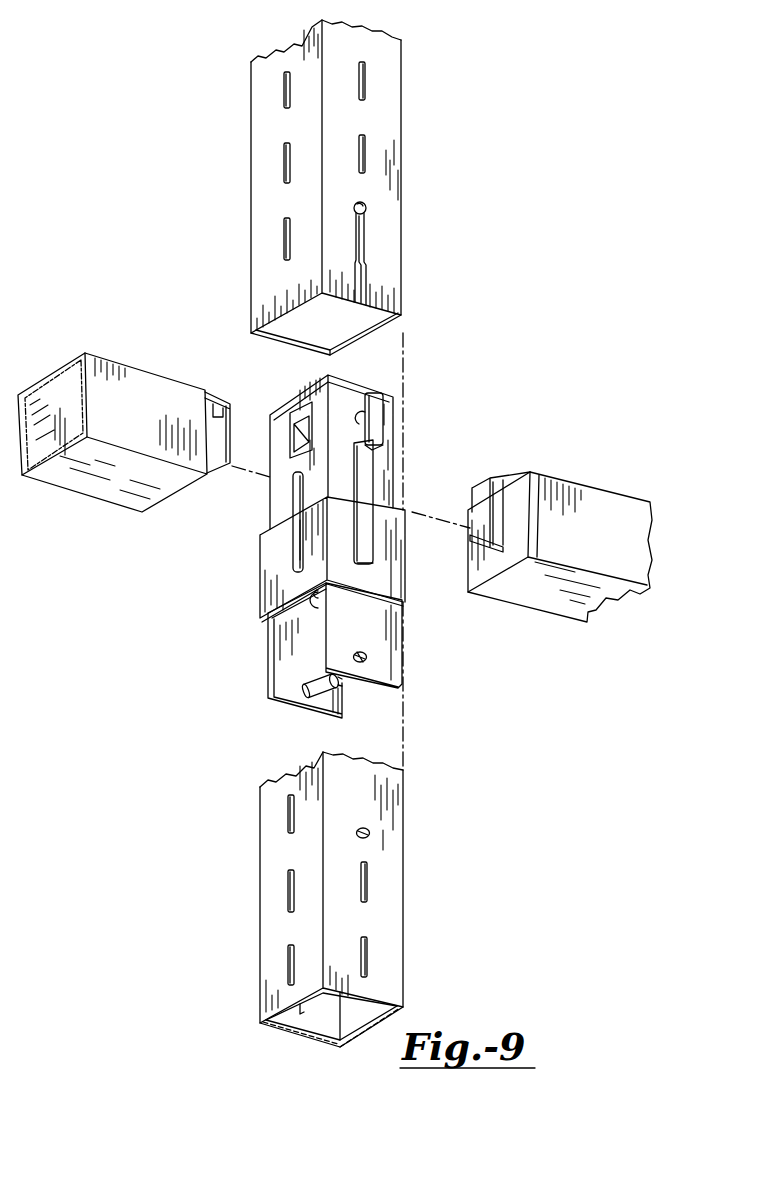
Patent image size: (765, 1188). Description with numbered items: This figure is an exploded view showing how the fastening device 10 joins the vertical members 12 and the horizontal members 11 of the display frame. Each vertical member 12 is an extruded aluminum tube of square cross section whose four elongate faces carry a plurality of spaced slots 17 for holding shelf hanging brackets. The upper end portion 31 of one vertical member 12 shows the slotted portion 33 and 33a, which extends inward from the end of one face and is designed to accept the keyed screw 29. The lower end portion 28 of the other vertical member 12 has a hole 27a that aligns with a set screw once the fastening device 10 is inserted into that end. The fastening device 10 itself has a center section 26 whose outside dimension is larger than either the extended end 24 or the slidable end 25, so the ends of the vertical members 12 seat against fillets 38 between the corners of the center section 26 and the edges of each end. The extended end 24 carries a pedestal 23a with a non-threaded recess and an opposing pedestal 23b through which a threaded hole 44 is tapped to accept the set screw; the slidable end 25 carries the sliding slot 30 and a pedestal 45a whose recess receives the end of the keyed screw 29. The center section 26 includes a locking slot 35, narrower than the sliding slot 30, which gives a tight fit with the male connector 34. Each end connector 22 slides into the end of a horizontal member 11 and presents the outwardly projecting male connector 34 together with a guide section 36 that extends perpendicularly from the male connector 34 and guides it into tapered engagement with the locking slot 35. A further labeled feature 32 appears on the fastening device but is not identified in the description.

The fastening device 10 is at (238, 608).
The horizontal member 11 is at (92, 503).
The vertical member 12 is at (327, 531).
The slots 17 is at (282, 230).
The end connector 22 is at (383, 475).
The pedestal 23a is at (317, 698).
The pedestal 23b is at (347, 682).
The extended end 24 is at (345, 658).
The slidable end 25 is at (345, 455).
The center section 26 is at (328, 559).
The hole 27a is at (370, 833).
The end portion 28 is at (390, 872).
The keyed screw 29 is at (377, 418).
The sliding slot 30 is at (363, 490).
The end portion 31 is at (325, 185).
The hook 32 is at (358, 412).
The slotted portion 33 is at (403, 243).
The slotted portion 33a is at (360, 233).
The male connector 34 is at (376, 451).
The locking slot 35 is at (372, 547).
The guide section 36 is at (213, 418).
The fillets 38 is at (288, 332).
The threaded hole 44 is at (367, 652).
The pedestal 45a is at (307, 437).